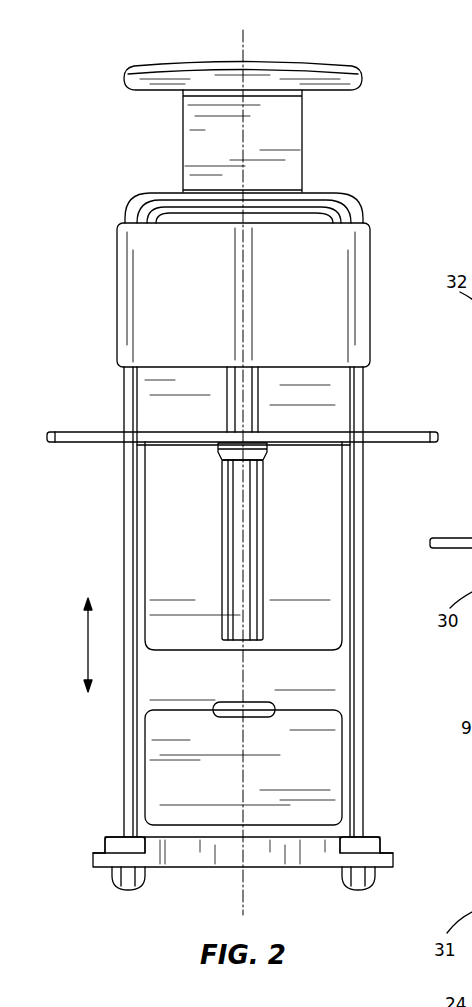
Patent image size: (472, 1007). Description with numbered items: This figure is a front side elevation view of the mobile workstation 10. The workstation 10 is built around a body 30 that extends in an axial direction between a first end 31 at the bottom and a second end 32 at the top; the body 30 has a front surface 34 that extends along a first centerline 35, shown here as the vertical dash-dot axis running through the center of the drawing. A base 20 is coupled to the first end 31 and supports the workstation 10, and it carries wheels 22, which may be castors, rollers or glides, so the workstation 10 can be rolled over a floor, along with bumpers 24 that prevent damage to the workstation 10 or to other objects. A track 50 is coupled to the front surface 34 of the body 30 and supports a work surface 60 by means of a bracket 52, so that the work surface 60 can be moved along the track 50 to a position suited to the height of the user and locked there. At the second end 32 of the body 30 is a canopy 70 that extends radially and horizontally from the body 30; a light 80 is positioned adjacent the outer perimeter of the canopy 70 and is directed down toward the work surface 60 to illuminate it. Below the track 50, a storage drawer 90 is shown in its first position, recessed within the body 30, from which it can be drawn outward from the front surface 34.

The mobile workstation 10 is at (100, 124).
The base 20 is at (178, 852).
The wheels 22 is at (126, 880).
The bumpers 24 is at (96, 858).
The body 30 is at (102, 513).
The first end 31 is at (237, 863).
The second end 32 is at (102, 245).
The front surface 34 is at (330, 688).
The first centerline 35 is at (246, 50).
The track 50 is at (247, 540).
The bracket 52 is at (266, 456).
The work surface 60 is at (381, 432).
The canopy 70 is at (311, 82).
The light 80 is at (306, 66).
The storage drawer 90 is at (326, 765).